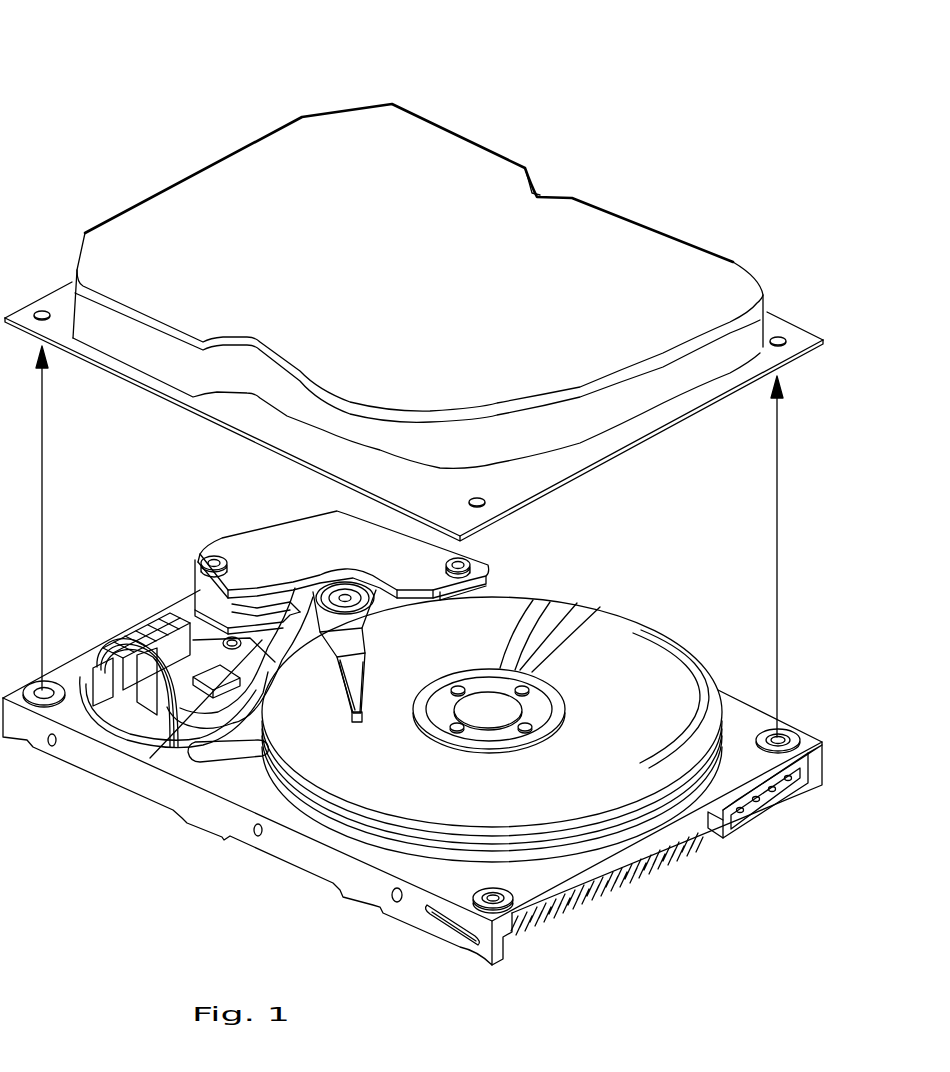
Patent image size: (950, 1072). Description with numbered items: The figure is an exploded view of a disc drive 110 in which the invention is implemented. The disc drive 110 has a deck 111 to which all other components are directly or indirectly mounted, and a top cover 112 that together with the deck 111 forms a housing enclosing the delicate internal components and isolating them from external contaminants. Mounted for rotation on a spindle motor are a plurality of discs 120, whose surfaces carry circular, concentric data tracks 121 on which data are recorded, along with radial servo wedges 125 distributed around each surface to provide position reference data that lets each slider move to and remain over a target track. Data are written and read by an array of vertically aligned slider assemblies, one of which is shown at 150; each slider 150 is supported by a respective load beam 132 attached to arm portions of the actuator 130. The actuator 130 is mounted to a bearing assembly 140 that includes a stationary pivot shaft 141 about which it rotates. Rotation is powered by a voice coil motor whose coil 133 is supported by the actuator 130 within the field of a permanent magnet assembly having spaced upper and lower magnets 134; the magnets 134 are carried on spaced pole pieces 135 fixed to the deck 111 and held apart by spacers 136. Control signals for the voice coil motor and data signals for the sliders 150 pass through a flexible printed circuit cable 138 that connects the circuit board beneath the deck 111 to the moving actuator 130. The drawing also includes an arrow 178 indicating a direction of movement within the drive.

The disc drive 110 is at (145, 78).
The deck 111 is at (742, 716).
The top cover 112 is at (606, 281).
The discs 120 is at (492, 729).
The data tracks 121 is at (682, 696).
The servo wedges 125 is at (588, 620).
The actuator 130 is at (360, 632).
The load beam 132 is at (350, 687).
The coil 133 is at (333, 582).
The magnets 134 is at (277, 607).
The pole pieces 135 is at (343, 555).
The spacers 136 is at (198, 586).
The flexible printed circuit cable 138 is at (165, 705).
The bearing assembly 140 is at (355, 604).
The pivot shaft 141 is at (368, 608).
The slider assembly 150 is at (363, 720).
The direction of rotation arrow 178 is at (556, 588).